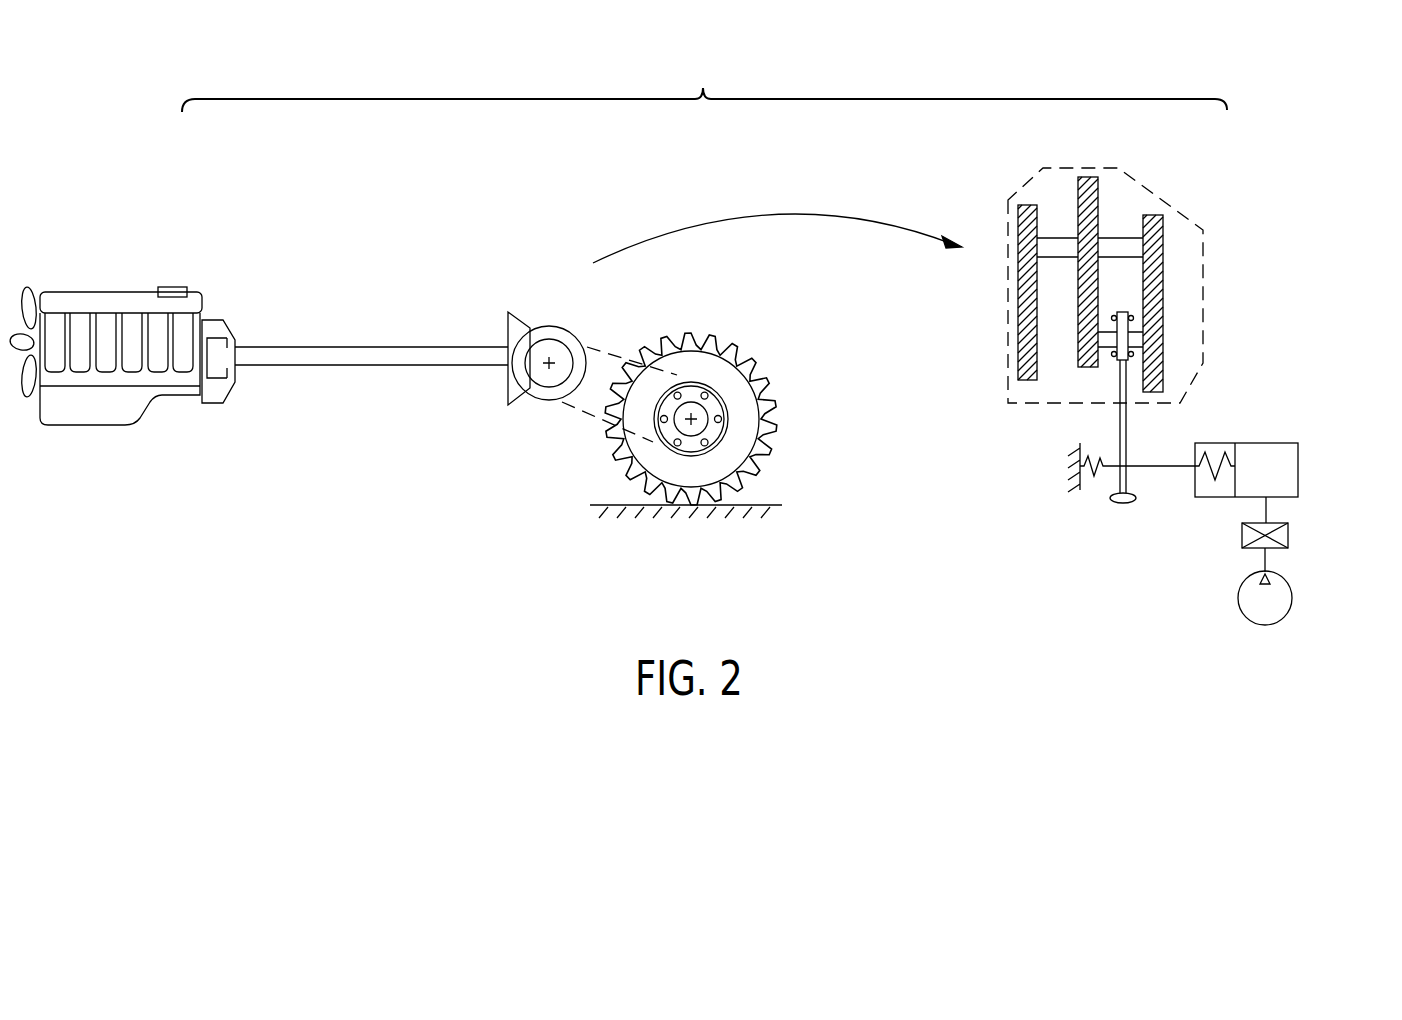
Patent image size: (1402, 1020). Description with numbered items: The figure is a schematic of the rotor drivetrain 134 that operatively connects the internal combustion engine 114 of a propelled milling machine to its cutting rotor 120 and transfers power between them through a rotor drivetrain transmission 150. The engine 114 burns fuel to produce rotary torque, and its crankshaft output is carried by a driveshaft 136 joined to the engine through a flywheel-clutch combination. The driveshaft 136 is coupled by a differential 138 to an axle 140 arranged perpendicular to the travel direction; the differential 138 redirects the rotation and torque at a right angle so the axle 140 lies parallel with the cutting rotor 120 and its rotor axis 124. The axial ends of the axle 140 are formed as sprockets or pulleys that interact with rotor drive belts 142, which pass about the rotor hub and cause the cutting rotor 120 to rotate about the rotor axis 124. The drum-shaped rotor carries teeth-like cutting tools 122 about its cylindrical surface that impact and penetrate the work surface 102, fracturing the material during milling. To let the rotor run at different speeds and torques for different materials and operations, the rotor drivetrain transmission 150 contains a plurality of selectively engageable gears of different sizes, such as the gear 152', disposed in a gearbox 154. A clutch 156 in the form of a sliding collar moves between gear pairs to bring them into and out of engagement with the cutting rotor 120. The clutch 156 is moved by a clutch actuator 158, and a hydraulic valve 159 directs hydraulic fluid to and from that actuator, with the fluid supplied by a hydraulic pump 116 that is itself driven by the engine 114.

The work surface 102 is at (598, 505).
The internal combustion engine 114 is at (78, 296).
The hydraulic pump 116 is at (1275, 595).
The cutting rotor 120 is at (734, 410).
The cutting tools 122 is at (778, 408).
The rotor axis 124 is at (700, 418).
The rotor drivetrain 134 is at (704, 80).
The driveshaft 136 is at (409, 352).
The differential 138 is at (518, 322).
The axle 140 is at (553, 347).
The rotor drive belts 142 is at (605, 352).
The rotor drivetrain transmission 150 is at (1146, 377).
The gear 152' is at (1002, 267).
The gearbox 154 is at (1010, 412).
The clutch 156 is at (1117, 366).
The clutch actuator 158 is at (1280, 443).
The hydraulic valve 159 is at (1288, 535).